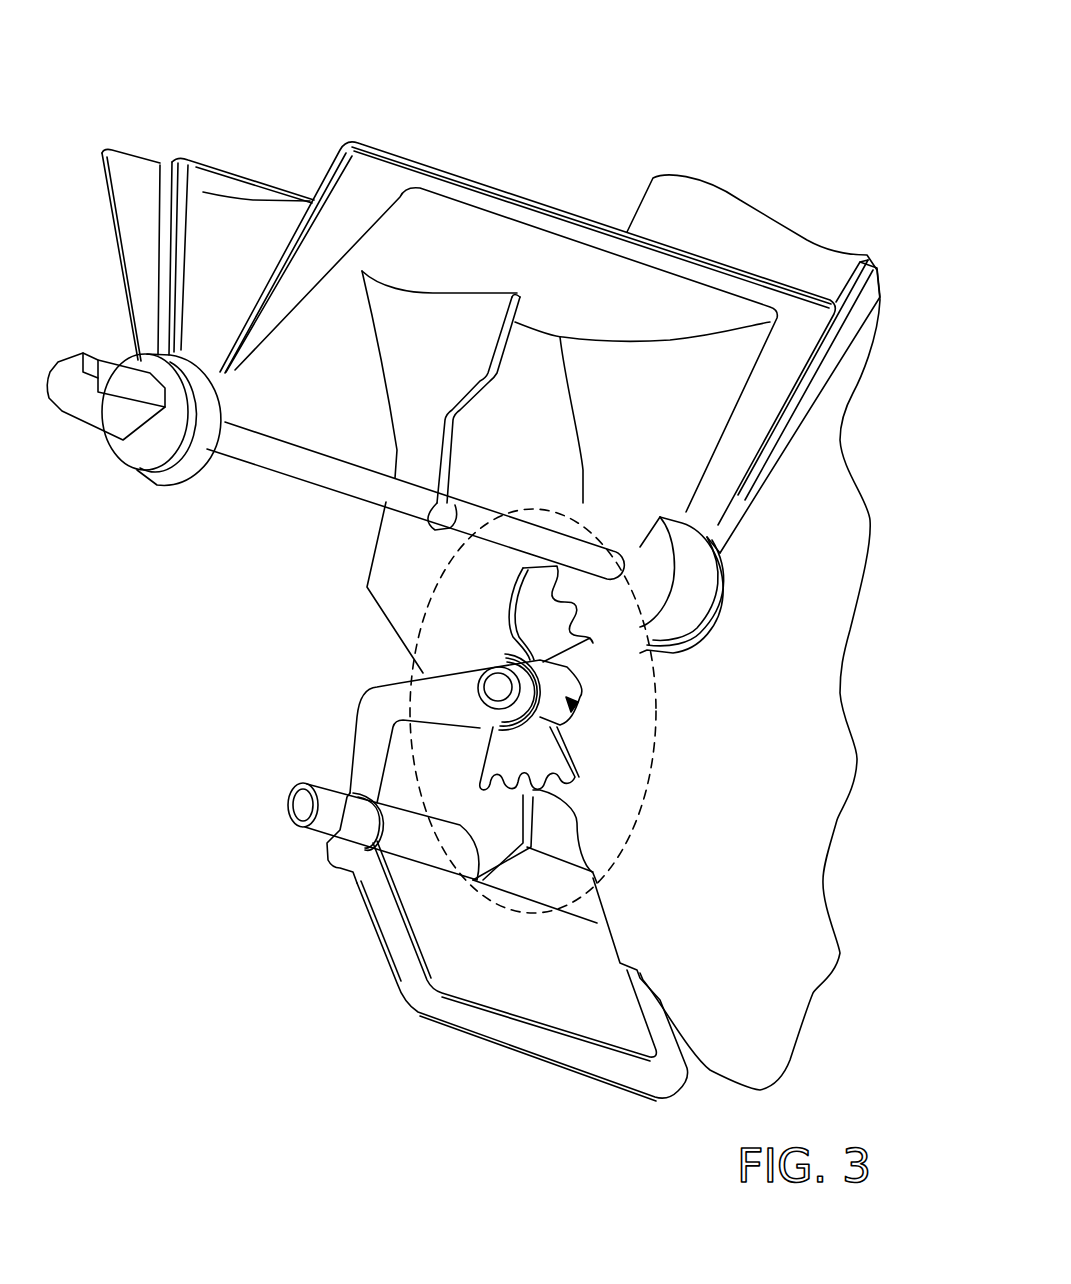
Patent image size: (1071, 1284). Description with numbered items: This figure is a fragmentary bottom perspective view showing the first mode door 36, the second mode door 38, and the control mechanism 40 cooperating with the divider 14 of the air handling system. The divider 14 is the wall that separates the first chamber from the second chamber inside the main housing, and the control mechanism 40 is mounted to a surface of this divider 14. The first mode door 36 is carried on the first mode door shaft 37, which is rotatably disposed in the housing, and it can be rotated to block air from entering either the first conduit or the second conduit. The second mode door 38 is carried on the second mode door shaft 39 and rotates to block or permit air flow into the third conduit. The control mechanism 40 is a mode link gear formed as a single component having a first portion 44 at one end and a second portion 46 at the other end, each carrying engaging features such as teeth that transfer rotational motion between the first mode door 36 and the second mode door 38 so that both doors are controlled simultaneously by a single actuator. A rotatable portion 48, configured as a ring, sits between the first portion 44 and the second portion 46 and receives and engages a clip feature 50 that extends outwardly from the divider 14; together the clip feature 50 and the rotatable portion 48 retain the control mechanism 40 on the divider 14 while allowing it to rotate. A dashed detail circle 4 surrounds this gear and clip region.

The divider 14 is at (780, 890).
The first mode door 36 is at (368, 175).
The first mode door shaft 37 is at (253, 440).
The second mode door 38 is at (533, 995).
The second mode door shaft 39 is at (300, 803).
The detail view circle 4 is at (418, 665).
The control mechanism 40 is at (572, 702).
The first portion 44 is at (557, 650).
The second portion 46 is at (590, 763).
The rotatable portion 48 is at (540, 745).
The clip feature 50 is at (480, 665).